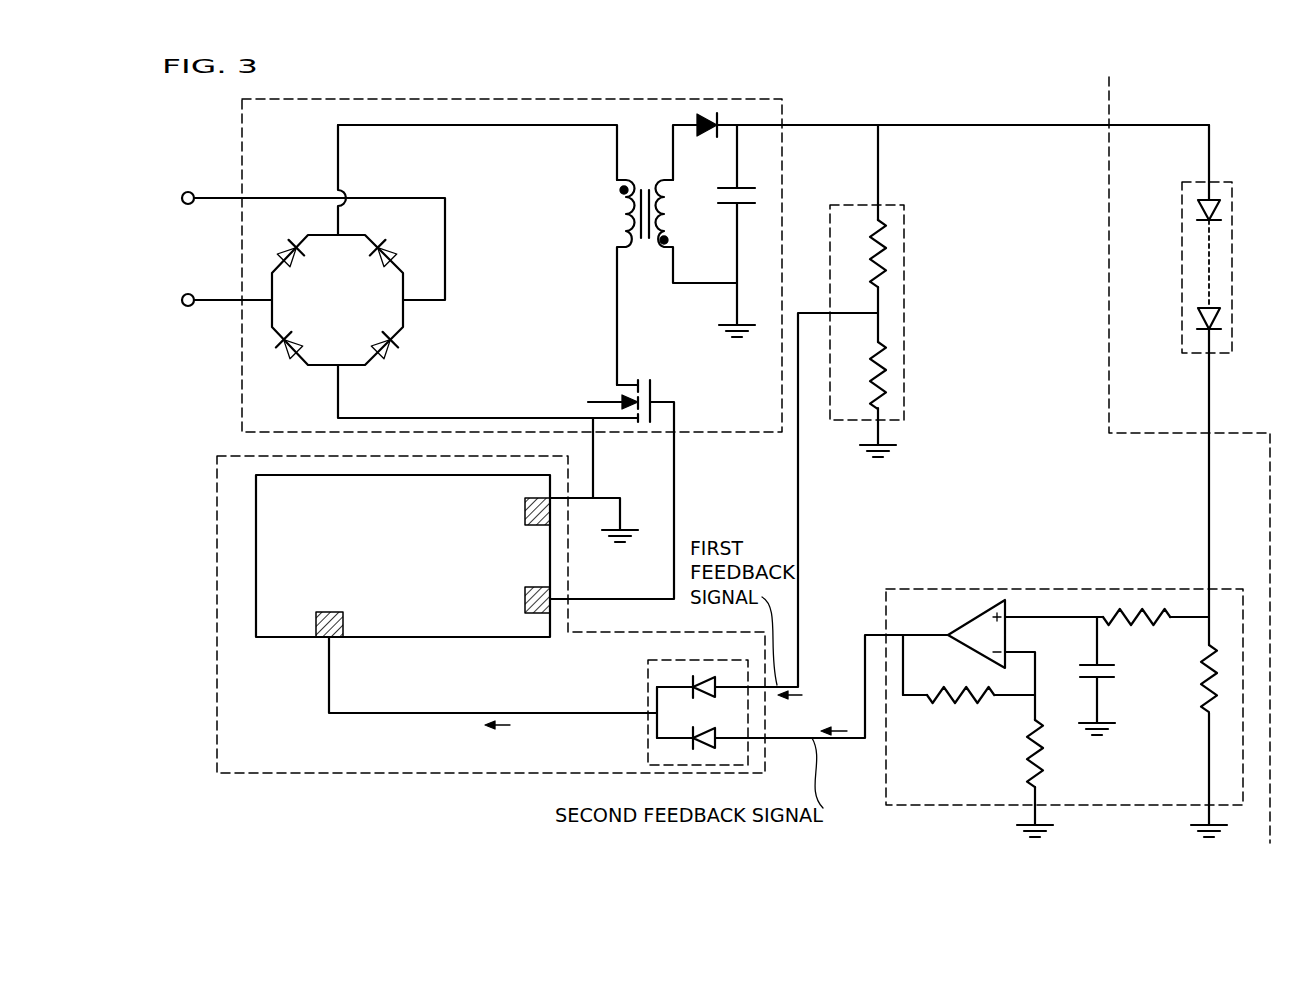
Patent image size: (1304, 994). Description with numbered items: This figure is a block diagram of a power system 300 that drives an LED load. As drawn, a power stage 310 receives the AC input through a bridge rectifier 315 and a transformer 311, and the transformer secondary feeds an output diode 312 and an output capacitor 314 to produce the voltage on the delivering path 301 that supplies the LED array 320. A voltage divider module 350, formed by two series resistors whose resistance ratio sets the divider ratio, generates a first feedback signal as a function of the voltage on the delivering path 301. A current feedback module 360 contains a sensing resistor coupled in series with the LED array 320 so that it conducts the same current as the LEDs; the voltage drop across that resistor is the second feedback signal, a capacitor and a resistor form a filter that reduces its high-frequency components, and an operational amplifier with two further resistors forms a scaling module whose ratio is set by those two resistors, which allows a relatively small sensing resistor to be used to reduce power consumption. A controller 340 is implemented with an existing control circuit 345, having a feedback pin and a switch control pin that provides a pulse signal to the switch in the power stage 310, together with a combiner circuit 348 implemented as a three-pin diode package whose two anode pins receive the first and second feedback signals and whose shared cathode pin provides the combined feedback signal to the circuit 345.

The power system 300 is at (1192, 48).
The output node 301 is at (984, 97).
The power converter 310 is at (242, 138).
The transformer 311 is at (622, 213).
The output diode 312 is at (697, 118).
The output capacitor 314 is at (752, 188).
The bridge rectifier 315 is at (403, 316).
The LED load 320 is at (1232, 255).
The control circuit 340 is at (217, 655).
The switching controller 345 is at (427, 637).
The feedback combining diodes 348 is at (648, 740).
The voltage divider 350 is at (904, 223).
The current feedback module 360 is at (1057, 589).